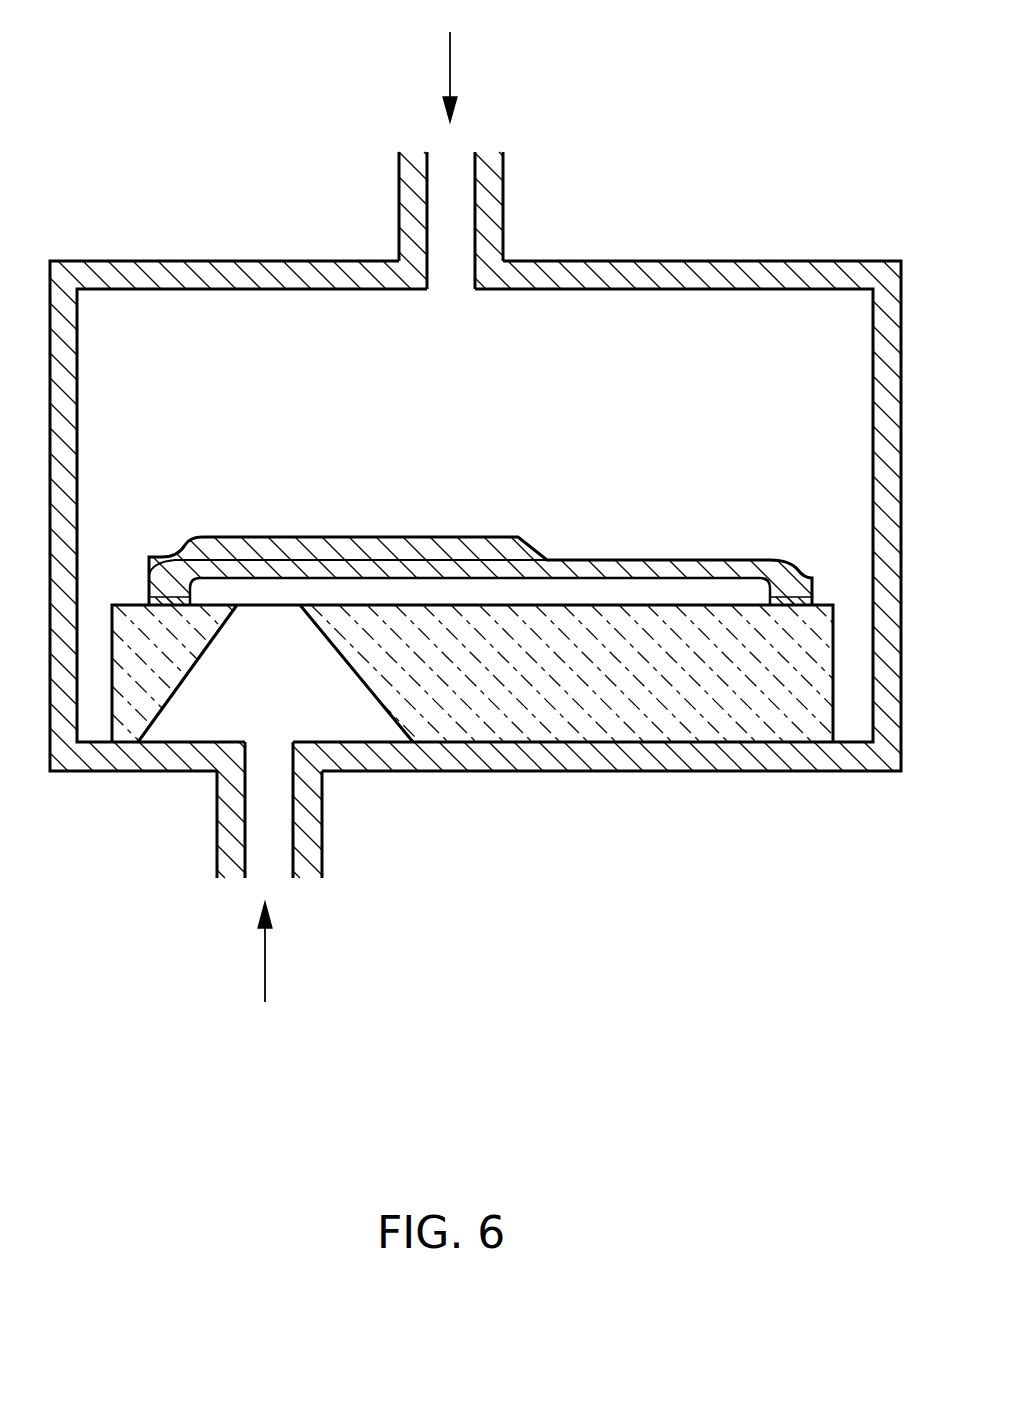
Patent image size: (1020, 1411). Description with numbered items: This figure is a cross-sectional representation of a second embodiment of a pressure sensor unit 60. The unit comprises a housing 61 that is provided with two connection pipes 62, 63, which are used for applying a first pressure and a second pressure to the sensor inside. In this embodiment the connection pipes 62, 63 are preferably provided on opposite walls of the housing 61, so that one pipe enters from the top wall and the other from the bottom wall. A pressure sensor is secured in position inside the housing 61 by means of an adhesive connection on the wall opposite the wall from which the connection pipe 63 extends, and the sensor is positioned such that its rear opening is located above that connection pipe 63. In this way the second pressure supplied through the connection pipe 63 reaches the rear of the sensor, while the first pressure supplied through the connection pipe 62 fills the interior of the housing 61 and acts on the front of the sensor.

The pressure sensor unit 60 is at (479, 523).
The housing 61 is at (887, 328).
The connection pipe 62 is at (490, 210).
The connection pipe 63 is at (323, 828).